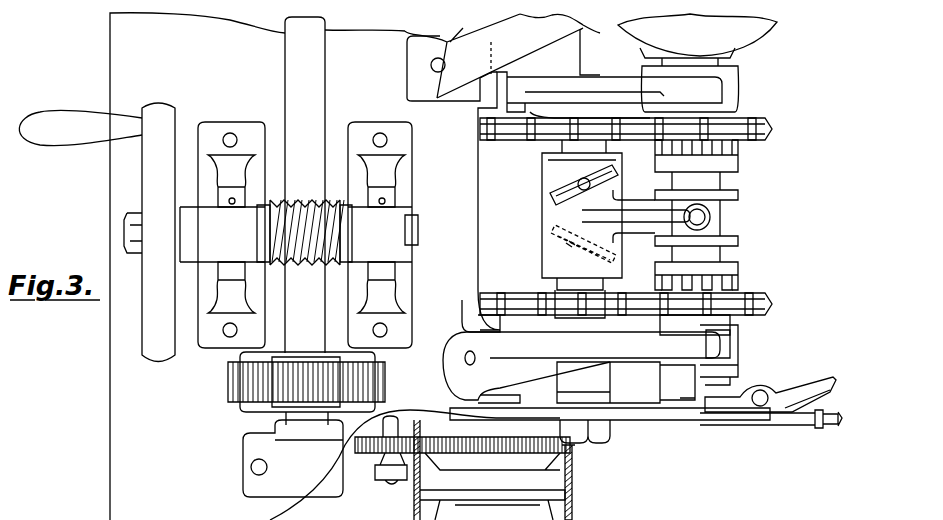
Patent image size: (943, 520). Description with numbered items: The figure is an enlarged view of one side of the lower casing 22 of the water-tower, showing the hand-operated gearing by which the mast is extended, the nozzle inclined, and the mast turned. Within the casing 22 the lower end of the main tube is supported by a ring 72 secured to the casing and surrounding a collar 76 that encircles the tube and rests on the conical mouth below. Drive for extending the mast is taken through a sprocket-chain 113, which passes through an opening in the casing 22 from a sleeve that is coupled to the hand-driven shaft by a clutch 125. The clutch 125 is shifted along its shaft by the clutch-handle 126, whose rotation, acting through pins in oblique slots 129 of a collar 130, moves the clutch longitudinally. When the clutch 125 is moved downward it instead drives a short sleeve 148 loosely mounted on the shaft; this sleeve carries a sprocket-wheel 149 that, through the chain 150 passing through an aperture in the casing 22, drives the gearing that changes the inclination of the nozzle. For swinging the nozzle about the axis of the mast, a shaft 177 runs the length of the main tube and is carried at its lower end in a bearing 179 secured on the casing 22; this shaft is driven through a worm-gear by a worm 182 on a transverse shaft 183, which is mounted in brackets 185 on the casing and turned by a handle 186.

The shaft 177 is at (318, 78).
The worm 182 is at (300, 196).
The shaft 183 is at (410, 230).
The brackets 185 is at (405, 285).
The handle 186 is at (163, 357).
The bearing 179 is at (252, 480).
The sprocket-chain 113 is at (515, 141).
The oblique slots 129 is at (568, 183).
The collar 130 is at (548, 208).
The chain 150 is at (788, 319).
The clutch 125 is at (742, 161).
The sprocket-wheel 149 is at (768, 300).
The short sleeve 148 is at (730, 342).
The clutch-handle 126 is at (830, 426).
The casing 22 is at (573, 498).
The ring 72 is at (462, 463).
The collar 76 is at (515, 497).